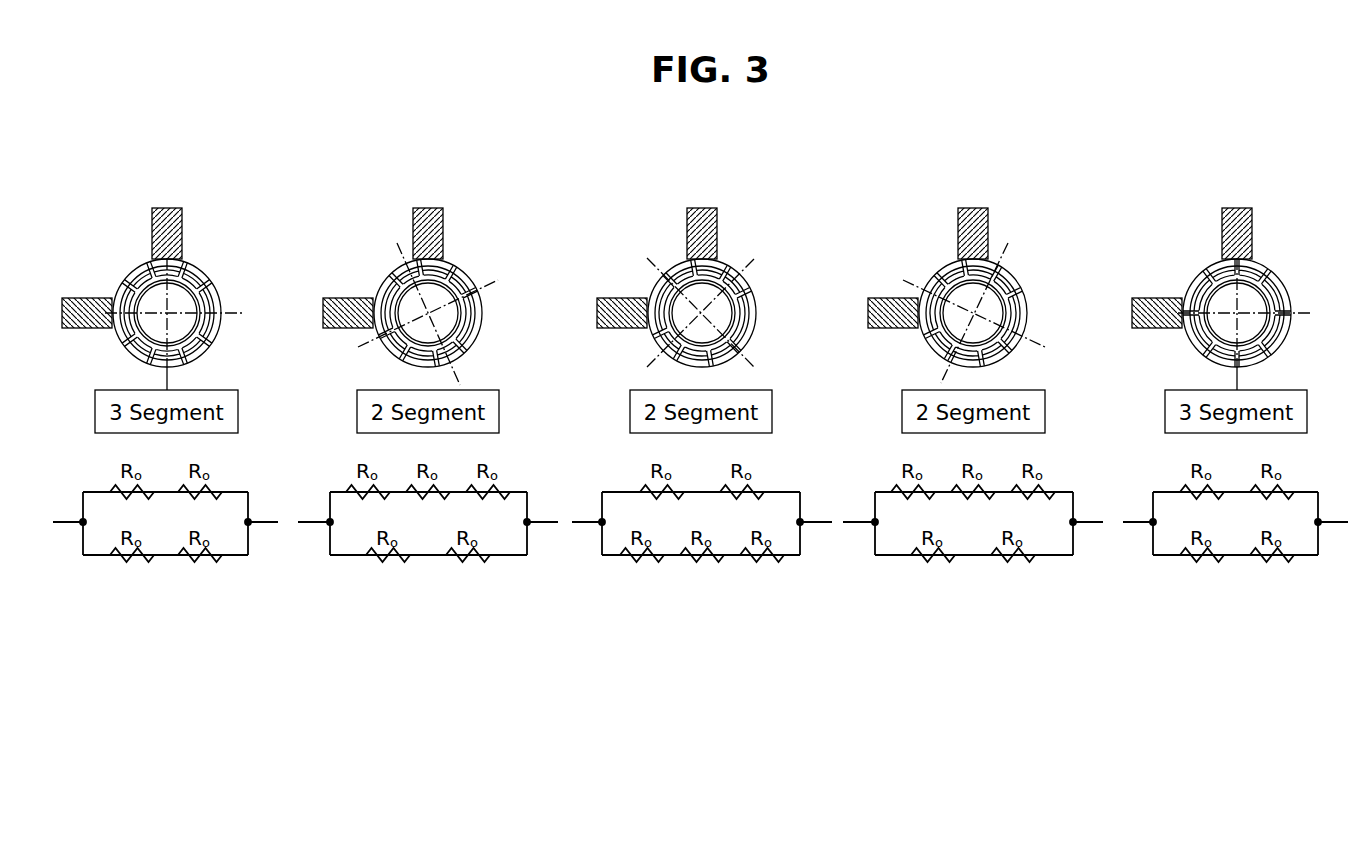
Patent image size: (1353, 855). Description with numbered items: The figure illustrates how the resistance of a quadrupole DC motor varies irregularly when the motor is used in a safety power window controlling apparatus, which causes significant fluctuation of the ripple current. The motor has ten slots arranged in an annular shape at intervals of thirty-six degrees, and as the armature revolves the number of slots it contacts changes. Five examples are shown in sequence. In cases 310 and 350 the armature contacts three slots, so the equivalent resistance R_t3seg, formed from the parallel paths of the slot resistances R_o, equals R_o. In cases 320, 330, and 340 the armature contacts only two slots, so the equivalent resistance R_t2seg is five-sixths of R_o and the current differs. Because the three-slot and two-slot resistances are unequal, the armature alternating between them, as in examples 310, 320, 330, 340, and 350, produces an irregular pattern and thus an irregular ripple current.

The three-slot contact case 310 is at (171, 294).
The two-slot contact case 320 is at (433, 291).
The two-slot contact case 330 is at (706, 283).
The two-slot contact case 340 is at (978, 290).
The three-slot contact case 350 is at (1241, 294).